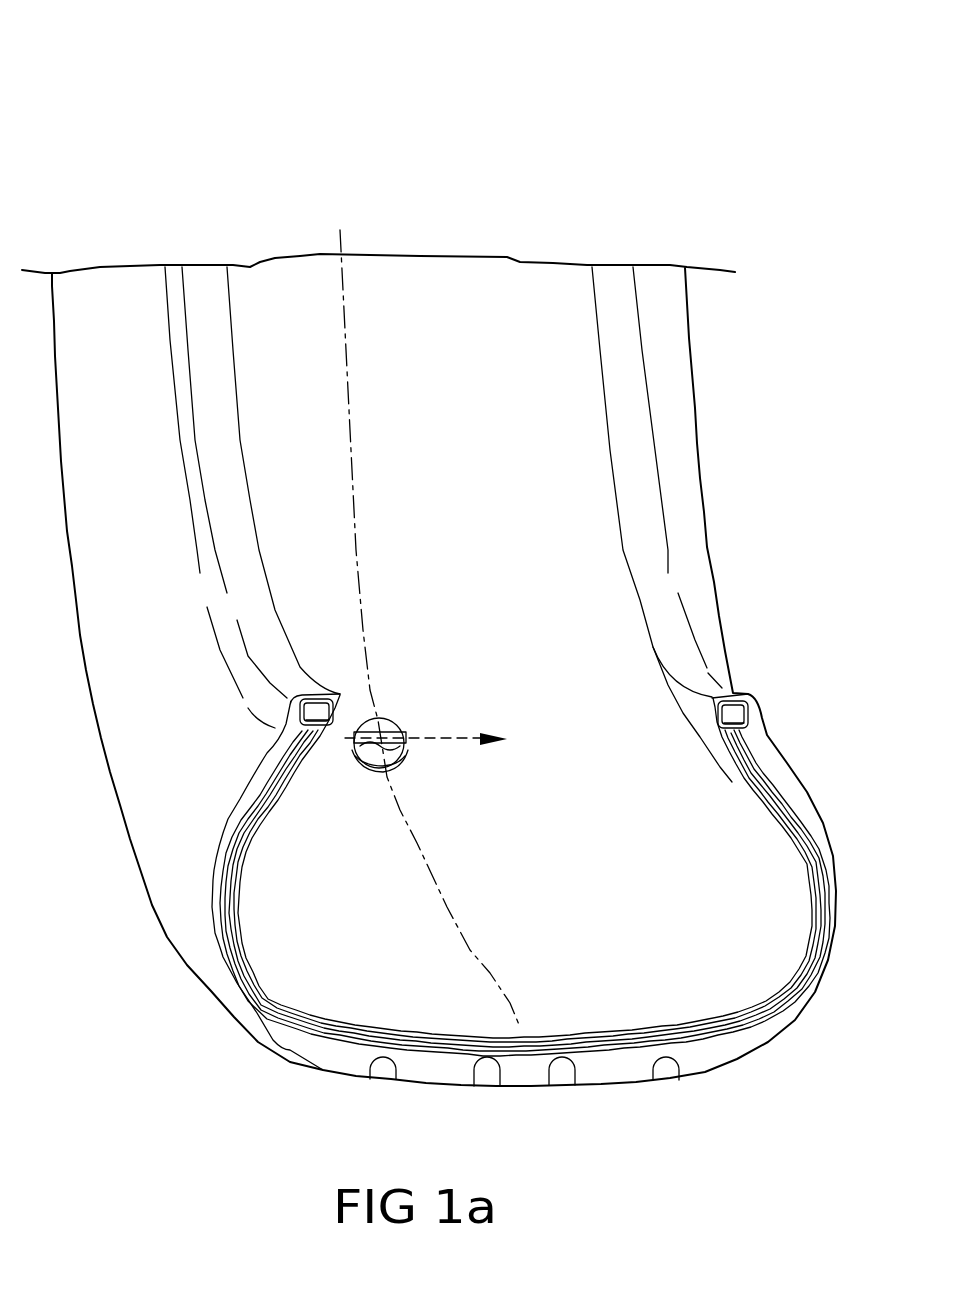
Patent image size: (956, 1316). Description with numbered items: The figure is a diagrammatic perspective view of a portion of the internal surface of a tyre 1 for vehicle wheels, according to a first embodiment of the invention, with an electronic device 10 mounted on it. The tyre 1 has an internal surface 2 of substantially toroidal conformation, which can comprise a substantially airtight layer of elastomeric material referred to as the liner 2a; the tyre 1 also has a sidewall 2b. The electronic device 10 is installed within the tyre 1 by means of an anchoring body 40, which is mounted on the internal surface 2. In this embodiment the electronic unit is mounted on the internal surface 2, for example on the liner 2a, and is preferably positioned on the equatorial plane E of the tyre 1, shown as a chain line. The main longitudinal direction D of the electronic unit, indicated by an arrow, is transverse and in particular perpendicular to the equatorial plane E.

The tyre 1 is at (718, 140).
The internal surface 2 is at (410, 298).
The liner 2a is at (475, 323).
The sidewall 2b is at (773, 888).
The electronic device 10 is at (403, 750).
The anchoring body 40 is at (367, 768).
The main longitudinal direction D is at (485, 735).
The equatorial plane E is at (510, 1003).